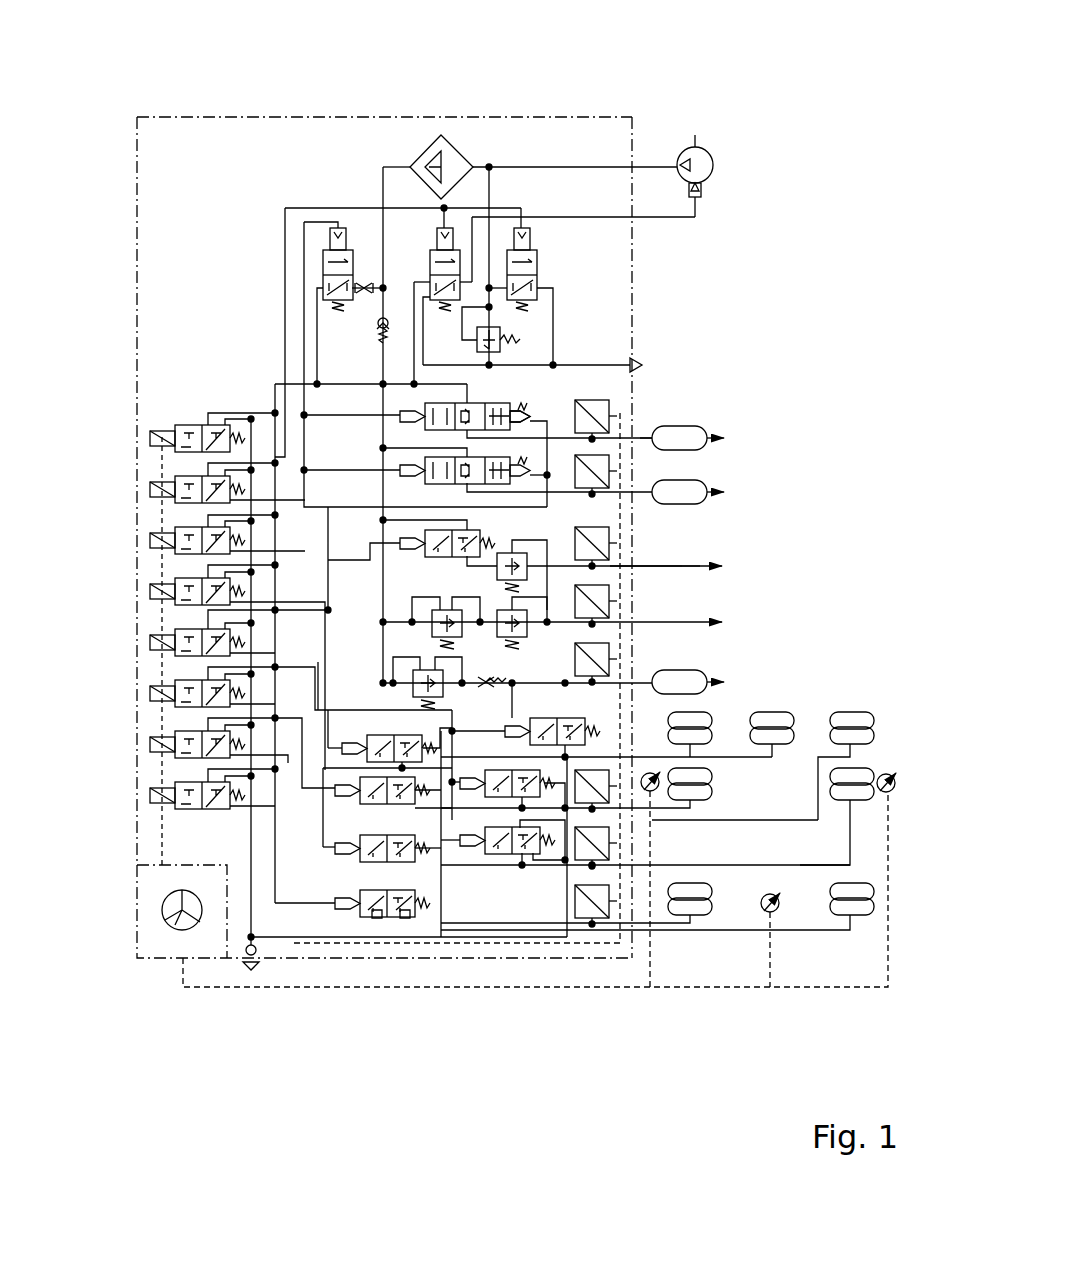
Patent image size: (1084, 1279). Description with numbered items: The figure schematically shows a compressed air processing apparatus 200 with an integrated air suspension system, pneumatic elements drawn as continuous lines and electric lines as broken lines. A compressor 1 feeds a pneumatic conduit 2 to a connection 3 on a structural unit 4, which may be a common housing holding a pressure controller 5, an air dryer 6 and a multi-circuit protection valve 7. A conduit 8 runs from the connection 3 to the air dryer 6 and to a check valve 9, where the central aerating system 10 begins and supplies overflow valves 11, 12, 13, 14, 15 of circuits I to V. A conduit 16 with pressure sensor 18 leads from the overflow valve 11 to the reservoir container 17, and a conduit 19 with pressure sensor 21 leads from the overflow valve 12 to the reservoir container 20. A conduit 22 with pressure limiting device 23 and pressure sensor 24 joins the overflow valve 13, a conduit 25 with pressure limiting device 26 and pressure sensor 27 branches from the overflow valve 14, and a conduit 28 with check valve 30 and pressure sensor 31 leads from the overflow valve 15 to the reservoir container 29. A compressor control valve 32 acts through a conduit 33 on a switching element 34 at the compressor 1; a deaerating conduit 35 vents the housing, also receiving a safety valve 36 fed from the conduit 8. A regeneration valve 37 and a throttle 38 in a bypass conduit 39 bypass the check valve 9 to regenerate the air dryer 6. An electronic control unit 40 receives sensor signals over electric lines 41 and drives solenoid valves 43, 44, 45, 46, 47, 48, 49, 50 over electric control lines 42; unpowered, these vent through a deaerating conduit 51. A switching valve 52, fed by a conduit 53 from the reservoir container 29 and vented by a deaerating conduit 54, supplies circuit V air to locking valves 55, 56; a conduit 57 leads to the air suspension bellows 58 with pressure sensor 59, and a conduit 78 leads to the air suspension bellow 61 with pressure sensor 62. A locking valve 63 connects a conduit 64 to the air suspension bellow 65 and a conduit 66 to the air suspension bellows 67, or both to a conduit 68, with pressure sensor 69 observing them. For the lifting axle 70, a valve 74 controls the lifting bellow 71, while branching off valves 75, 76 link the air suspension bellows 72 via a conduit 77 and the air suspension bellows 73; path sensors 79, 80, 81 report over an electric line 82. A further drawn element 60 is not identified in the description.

The compressed air processing apparatus 200 is at (158, 104).
The compressor 1 is at (695, 145).
The pneumatic conduit 2 is at (651, 162).
The connection 3 is at (629, 160).
The structural unit 4 is at (541, 115).
The pressure controller 5 is at (549, 264).
The air dryer 6 is at (421, 134).
The multi-circuit protection valve 7 is at (523, 393).
The conduit 8 is at (505, 165).
The check valve 9 is at (376, 325).
The central aerating system 10 is at (381, 383).
The overflow valve 11 is at (528, 407).
The overflow valve 12 is at (507, 447).
The overflow valve 13 is at (618, 530).
The overflow valve 14 is at (479, 641).
The overflow valve 15 is at (462, 697).
The conduit 16 is at (687, 433).
The reservoir container 17 is at (618, 437).
The pressure sensor 18 is at (600, 403).
The conduit 19 is at (500, 522).
The reservoir container 20 is at (697, 490).
The pressure sensor 21 is at (602, 463).
The conduit 22 is at (700, 557).
The pressure limiting device 23 is at (550, 576).
The pressure sensor 24 is at (682, 563).
The conduit 25 is at (656, 620).
The pressure limiting device 26 is at (549, 628).
The pressure sensor 27 is at (598, 588).
The conduit 28 is at (522, 700).
The reservoir container 29 is at (702, 690).
The check valve 30 is at (479, 679).
The pressure sensor 31 is at (575, 660).
The compressor control valve 32 is at (367, 275).
The conduit 33 is at (700, 214).
The switching element 34 is at (705, 190).
The deaerating conduit 35 is at (637, 362).
The safety valve 36 is at (535, 334).
The regeneration valve 37 is at (315, 265).
The throttle 38 is at (411, 262).
The bypass conduit 39 is at (318, 298).
The electronic control unit 40 is at (160, 912).
The electric lines 41 is at (618, 413).
The electric control lines 42 is at (155, 860).
The first solenoid valve 43 is at (150, 438).
The second solenoid valve 44 is at (150, 489).
The third solenoid valve 45 is at (150, 540).
The fourth solenoid valve 46 is at (150, 591).
The fifth solenoid valve 47 is at (150, 642).
The sixth solenoid valve 48 is at (150, 693).
The seventh solenoid valve 49 is at (150, 744).
The solenoid valve 50 is at (150, 795).
The deaerating conduit 51 is at (249, 838).
The switching valve 52 is at (374, 722).
The conduit 53 is at (405, 735).
The deaerating conduit 54 is at (552, 940).
The locking valve 55 is at (296, 855).
The locking valve 56 is at (349, 872).
The conduit 57 is at (441, 938).
The air suspension bellows 58 is at (700, 758).
The pressure sensor 59 is at (657, 794).
The pilot line 60 is at (470, 802).
The air suspension bellow 61 is at (864, 778).
The pressure sensor 62 is at (512, 845).
The locking valve 63 is at (374, 932).
The conduit 64 is at (603, 895).
The air suspension bellow 65 is at (692, 892).
The conduit 66 is at (746, 926).
The air suspension bellows 67 is at (864, 893).
The conduit 68 is at (360, 812).
The pressure sensor 69 is at (729, 932).
The lifting axle 70 is at (813, 727).
The lifting bellow 71 is at (780, 716).
The air suspension bellows 72 is at (690, 720).
The air suspension bellows 73 is at (864, 718).
The valve 74 is at (522, 736).
The branching off valve 75 is at (500, 860).
The branching off valve 76 is at (550, 928).
The conduit 77 is at (696, 756).
The conduit 78 is at (808, 864).
The path sensor 79 is at (658, 792).
The path sensor 80 is at (895, 787).
The path sensor 81 is at (779, 897).
The electric line 82 is at (845, 990).